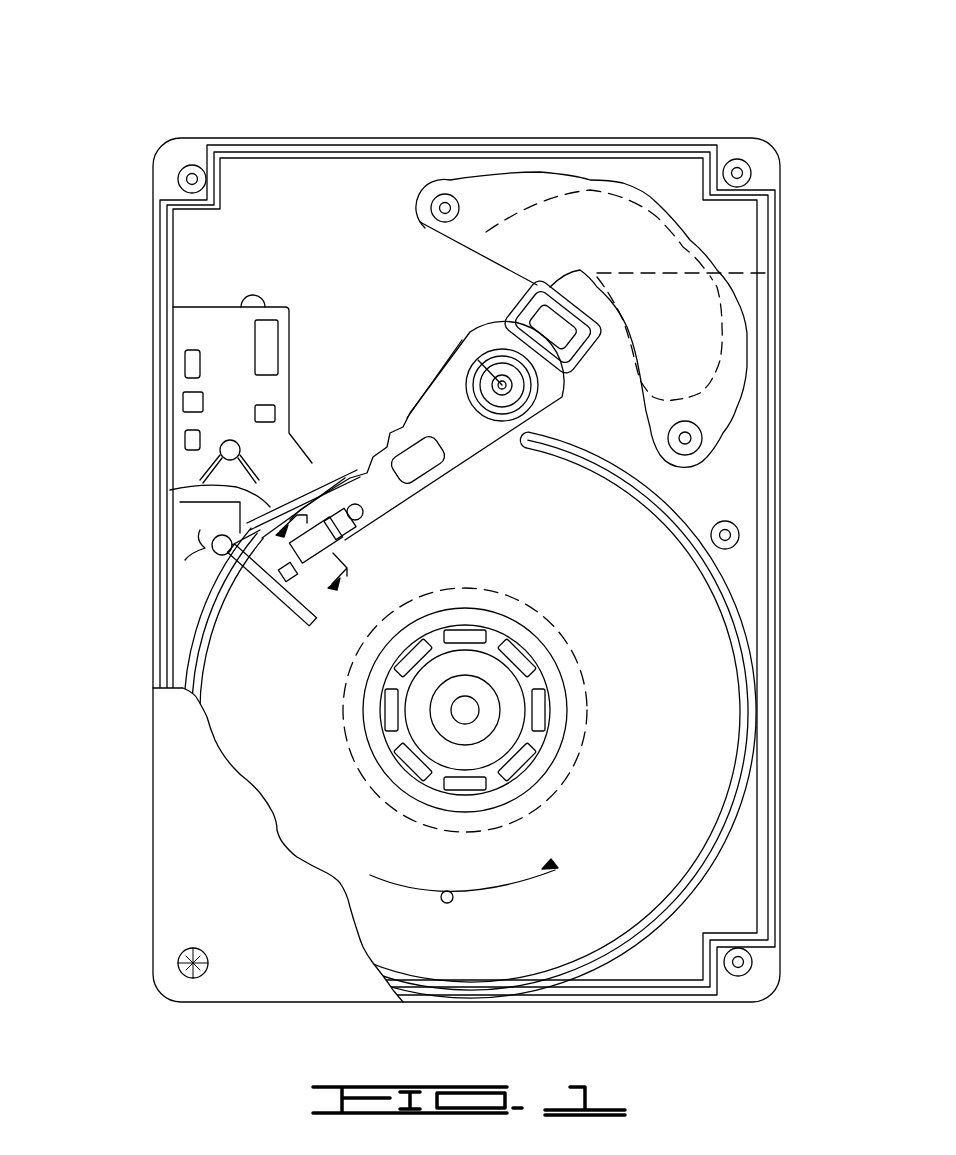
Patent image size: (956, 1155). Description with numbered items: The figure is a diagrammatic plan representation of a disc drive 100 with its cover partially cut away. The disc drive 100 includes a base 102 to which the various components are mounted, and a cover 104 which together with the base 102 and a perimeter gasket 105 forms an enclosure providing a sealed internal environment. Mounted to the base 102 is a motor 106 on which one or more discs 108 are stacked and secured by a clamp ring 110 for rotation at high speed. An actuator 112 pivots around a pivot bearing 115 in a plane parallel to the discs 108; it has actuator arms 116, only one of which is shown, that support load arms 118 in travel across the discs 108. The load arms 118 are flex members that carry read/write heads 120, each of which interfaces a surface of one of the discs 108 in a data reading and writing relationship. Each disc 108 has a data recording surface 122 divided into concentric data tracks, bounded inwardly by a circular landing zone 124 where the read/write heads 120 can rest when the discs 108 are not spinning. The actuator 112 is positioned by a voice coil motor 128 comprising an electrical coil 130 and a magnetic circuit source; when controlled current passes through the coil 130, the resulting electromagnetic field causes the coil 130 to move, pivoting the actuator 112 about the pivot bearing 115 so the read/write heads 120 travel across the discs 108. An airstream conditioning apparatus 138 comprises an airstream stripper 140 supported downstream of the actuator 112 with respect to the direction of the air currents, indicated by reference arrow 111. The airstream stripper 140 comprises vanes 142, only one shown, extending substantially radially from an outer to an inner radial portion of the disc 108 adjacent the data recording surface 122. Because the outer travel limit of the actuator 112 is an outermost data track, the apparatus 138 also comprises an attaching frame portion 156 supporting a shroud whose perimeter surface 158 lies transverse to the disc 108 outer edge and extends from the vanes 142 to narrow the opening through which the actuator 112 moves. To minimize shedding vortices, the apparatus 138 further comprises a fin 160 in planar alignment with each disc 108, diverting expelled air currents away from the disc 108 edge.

The disc drive 100 is at (216, 109).
The base 102 is at (200, 240).
The cover 104 is at (205, 855).
The perimeter gasket 105 is at (712, 135).
The motor 106 is at (486, 740).
The disc 108 is at (772, 648).
The clamp ring 110 is at (535, 673).
The direction of air currents 111 is at (453, 903).
The actuator 112 is at (468, 324).
The pivot bearing 115 is at (478, 360).
The actuator arm 116 is at (400, 500).
The load arm 118 is at (360, 550).
The read/write head 120 is at (205, 568).
The data recording surface 122 is at (700, 792).
The landing zone 124 is at (350, 752).
The voice coil motor 128 is at (560, 210).
The electrical coil 130 is at (735, 262).
The airstream conditioning apparatus 138 is at (302, 386).
The airstream stripper 140 is at (250, 601).
The vane 142 is at (292, 630).
The attaching frame portion 156 is at (292, 482).
The perimeter surface 158 is at (275, 505).
The fin 160 is at (180, 490).